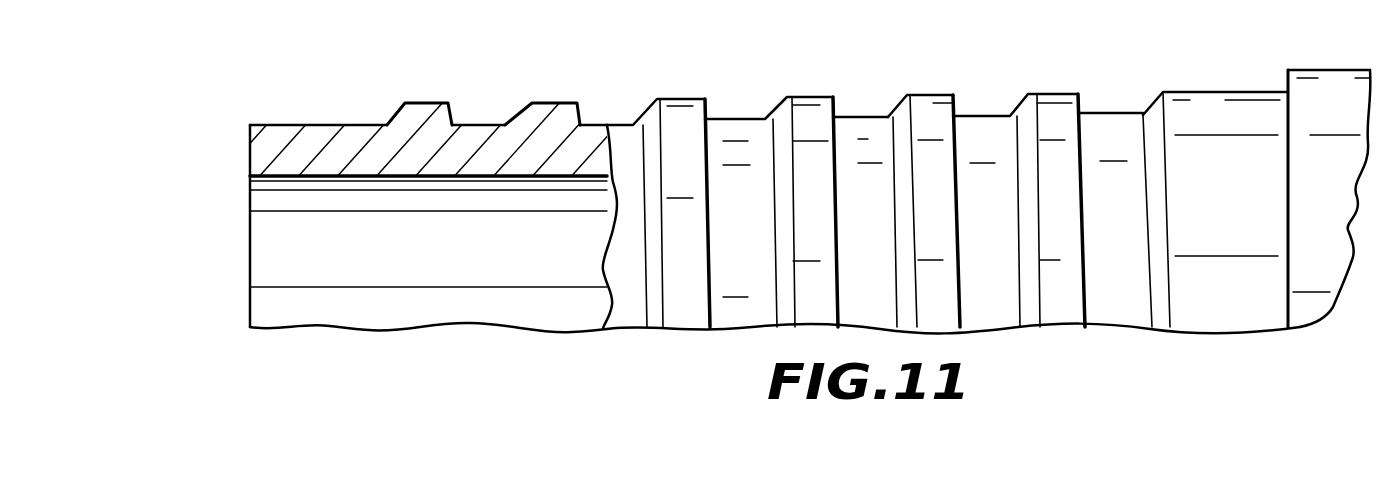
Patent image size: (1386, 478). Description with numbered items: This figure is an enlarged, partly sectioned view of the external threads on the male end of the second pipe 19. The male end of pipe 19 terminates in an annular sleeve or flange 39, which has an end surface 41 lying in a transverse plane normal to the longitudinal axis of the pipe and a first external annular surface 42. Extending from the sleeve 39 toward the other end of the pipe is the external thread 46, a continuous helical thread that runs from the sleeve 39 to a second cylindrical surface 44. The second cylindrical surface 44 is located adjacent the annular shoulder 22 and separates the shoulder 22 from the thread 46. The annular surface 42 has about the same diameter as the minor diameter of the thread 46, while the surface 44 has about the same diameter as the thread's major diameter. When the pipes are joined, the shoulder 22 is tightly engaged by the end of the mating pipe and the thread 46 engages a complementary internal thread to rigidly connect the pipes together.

The pipe 19 is at (1333, 110).
The annular shoulder 22 is at (1288, 82).
The annular sleeve or flange 39 is at (348, 137).
The end surface 41 is at (250, 158).
The first external annular surface 42 is at (275, 130).
The second cylindrical surface 44 is at (1212, 115).
The external thread 46 is at (925, 98).